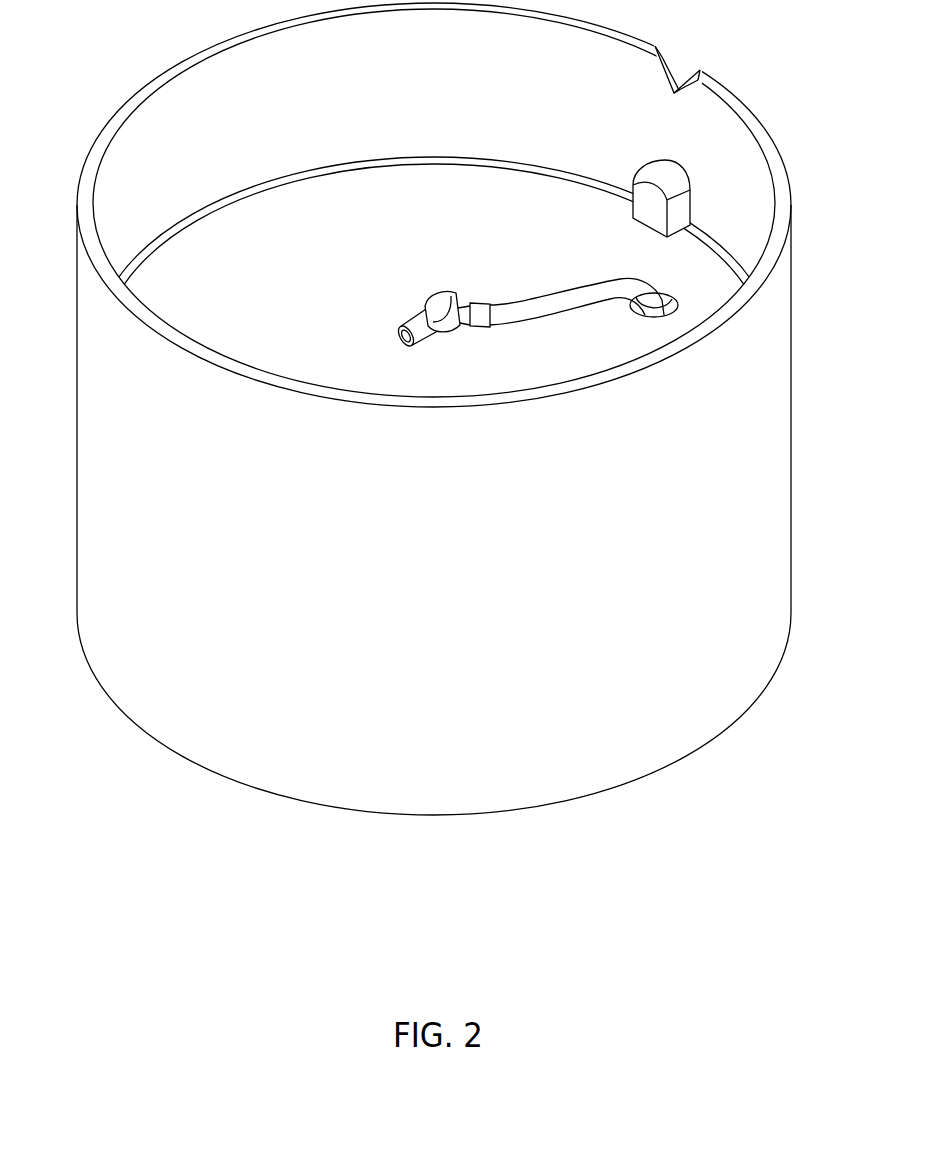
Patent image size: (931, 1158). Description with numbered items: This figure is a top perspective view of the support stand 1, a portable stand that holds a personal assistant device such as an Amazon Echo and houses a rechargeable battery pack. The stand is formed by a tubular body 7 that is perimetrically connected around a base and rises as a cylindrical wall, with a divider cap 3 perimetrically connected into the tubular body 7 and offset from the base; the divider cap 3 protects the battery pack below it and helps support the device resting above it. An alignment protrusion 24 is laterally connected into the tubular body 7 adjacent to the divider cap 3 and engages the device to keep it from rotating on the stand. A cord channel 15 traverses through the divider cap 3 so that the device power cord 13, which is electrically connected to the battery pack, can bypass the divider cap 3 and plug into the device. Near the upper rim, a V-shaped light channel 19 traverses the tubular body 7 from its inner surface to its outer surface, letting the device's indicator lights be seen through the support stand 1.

The support stand 1 is at (441, 409).
The divider cap 3 is at (474, 172).
The tubular body 7 is at (78, 332).
The device power cord 13 is at (436, 306).
The cord channel 15 is at (665, 314).
The light channel 19 is at (676, 70).
The alignment protrusion 24 is at (643, 180).